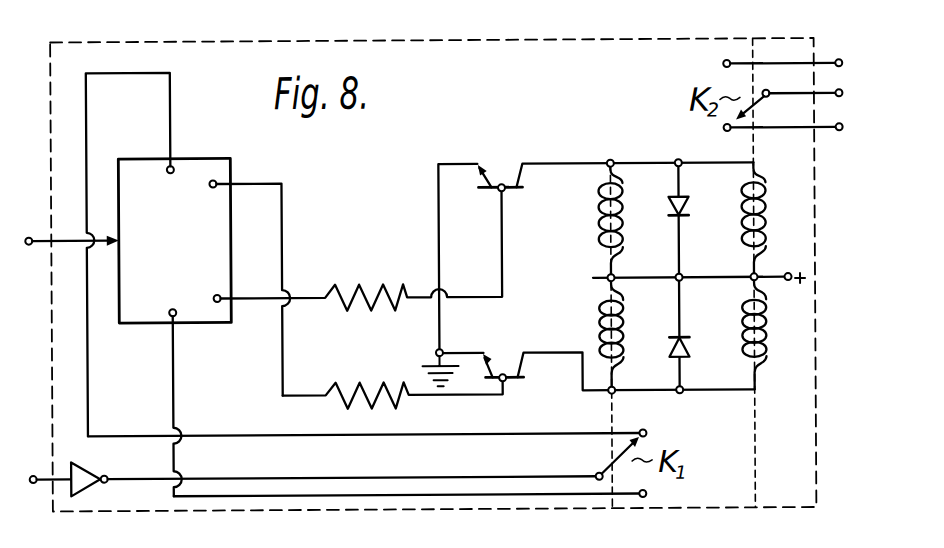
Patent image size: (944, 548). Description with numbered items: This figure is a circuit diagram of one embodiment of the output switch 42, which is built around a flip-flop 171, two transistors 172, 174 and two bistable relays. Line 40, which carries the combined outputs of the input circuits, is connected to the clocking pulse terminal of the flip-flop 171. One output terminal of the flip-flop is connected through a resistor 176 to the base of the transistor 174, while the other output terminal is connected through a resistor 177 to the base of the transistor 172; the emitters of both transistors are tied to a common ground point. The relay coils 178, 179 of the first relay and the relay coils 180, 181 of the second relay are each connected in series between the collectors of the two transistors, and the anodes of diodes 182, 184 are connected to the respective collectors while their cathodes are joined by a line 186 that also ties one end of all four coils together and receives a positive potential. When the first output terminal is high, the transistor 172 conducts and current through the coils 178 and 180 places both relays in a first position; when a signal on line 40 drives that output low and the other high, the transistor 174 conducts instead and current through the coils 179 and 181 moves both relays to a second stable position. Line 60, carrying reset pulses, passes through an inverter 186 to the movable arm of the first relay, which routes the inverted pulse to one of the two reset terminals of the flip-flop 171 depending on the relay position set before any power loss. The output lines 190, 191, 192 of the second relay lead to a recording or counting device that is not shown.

The line 40 is at (63, 237).
The output switch 42 is at (770, 498).
The line 60 is at (60, 471).
The flip-flop 171 is at (233, 237).
The transistor 172 is at (502, 165).
The transistor 174 is at (503, 359).
The resistor 176 is at (393, 379).
The resistor 177 is at (393, 281).
The relay coil 178 is at (600, 236).
The relay coil 179 is at (600, 322).
The relay coil 180 is at (781, 236).
The relay coil 181 is at (768, 357).
The diode 182 is at (688, 213).
The diode 184 is at (689, 355).
The line 186 is at (98, 469).
The output line 190 is at (780, 60).
The output line 191 is at (822, 99).
The output line 192 is at (760, 132).